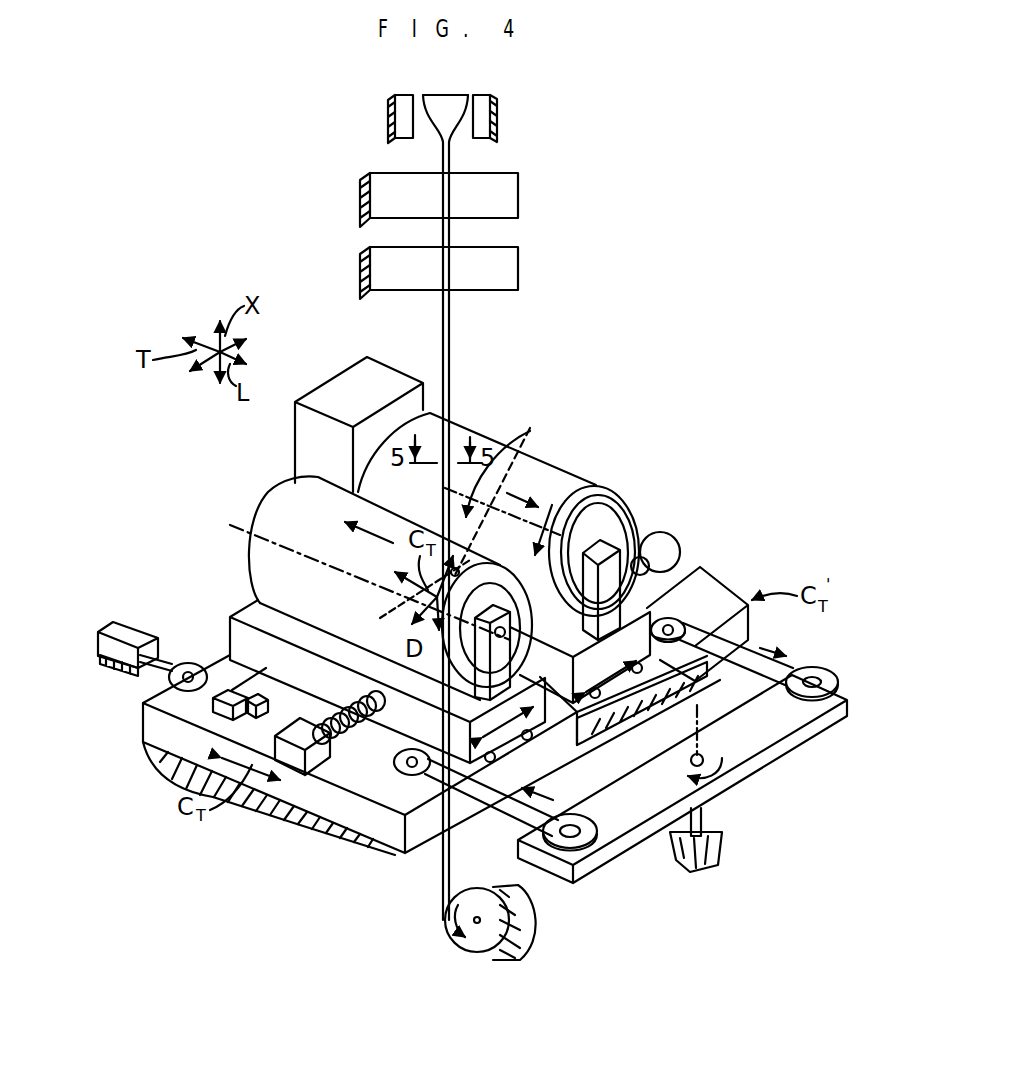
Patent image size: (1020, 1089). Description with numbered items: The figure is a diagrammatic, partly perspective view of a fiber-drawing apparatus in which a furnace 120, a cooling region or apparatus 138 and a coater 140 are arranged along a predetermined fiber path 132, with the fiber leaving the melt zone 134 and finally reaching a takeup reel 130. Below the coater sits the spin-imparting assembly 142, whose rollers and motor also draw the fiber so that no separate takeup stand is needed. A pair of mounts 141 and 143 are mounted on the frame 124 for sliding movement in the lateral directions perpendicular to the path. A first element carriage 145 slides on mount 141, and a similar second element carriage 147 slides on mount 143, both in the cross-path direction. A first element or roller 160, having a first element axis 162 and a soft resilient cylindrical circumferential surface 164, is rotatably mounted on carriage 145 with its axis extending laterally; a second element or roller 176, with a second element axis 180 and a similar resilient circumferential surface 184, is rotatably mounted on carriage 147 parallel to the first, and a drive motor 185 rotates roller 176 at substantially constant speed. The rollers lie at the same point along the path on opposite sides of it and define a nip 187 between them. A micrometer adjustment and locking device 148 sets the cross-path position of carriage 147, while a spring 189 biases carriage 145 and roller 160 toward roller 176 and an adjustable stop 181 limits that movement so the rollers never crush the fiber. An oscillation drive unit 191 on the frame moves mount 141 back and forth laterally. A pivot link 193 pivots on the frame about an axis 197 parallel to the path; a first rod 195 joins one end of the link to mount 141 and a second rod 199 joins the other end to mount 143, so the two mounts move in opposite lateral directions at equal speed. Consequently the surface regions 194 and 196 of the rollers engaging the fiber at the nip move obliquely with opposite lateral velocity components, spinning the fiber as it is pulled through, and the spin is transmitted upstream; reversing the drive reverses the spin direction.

The furnace 120 is at (505, 93).
The frame 124 is at (395, 117).
The takeup reel 130 is at (483, 946).
The fiber path 132 is at (450, 348).
The melt zone 134 is at (452, 158).
The cooling region or apparatus 138 is at (520, 197).
The coater 140 is at (520, 268).
The first mount 141 is at (172, 766).
The spin-imparting assembly 142 is at (240, 491).
The second mount 143 is at (703, 592).
The first element carriage 145 is at (228, 624).
The second element carriage 147 is at (672, 578).
The micrometer adjustment and locking device 148 is at (668, 540).
The first element or roller 160 is at (264, 494).
The first element axis 162 is at (245, 527).
The cylindrical circumferential surface 164 is at (258, 580).
The second element or second roller 176 is at (590, 457).
The second element axis 180 is at (553, 557).
The adjustable stop 181 is at (205, 705).
The cylindrical circumferential surface 184 is at (592, 485).
The drive motor 185 is at (341, 380).
The nip 187 is at (505, 488).
The spring 189 is at (350, 735).
The oscillation drive unit 191 is at (123, 620).
The pivot link 193 is at (612, 862).
The surface region 194 is at (392, 608).
The first rod 195 is at (512, 812).
The surface region 196 is at (530, 448).
The pivot axis 197 is at (684, 728).
The second rod 199 is at (740, 658).